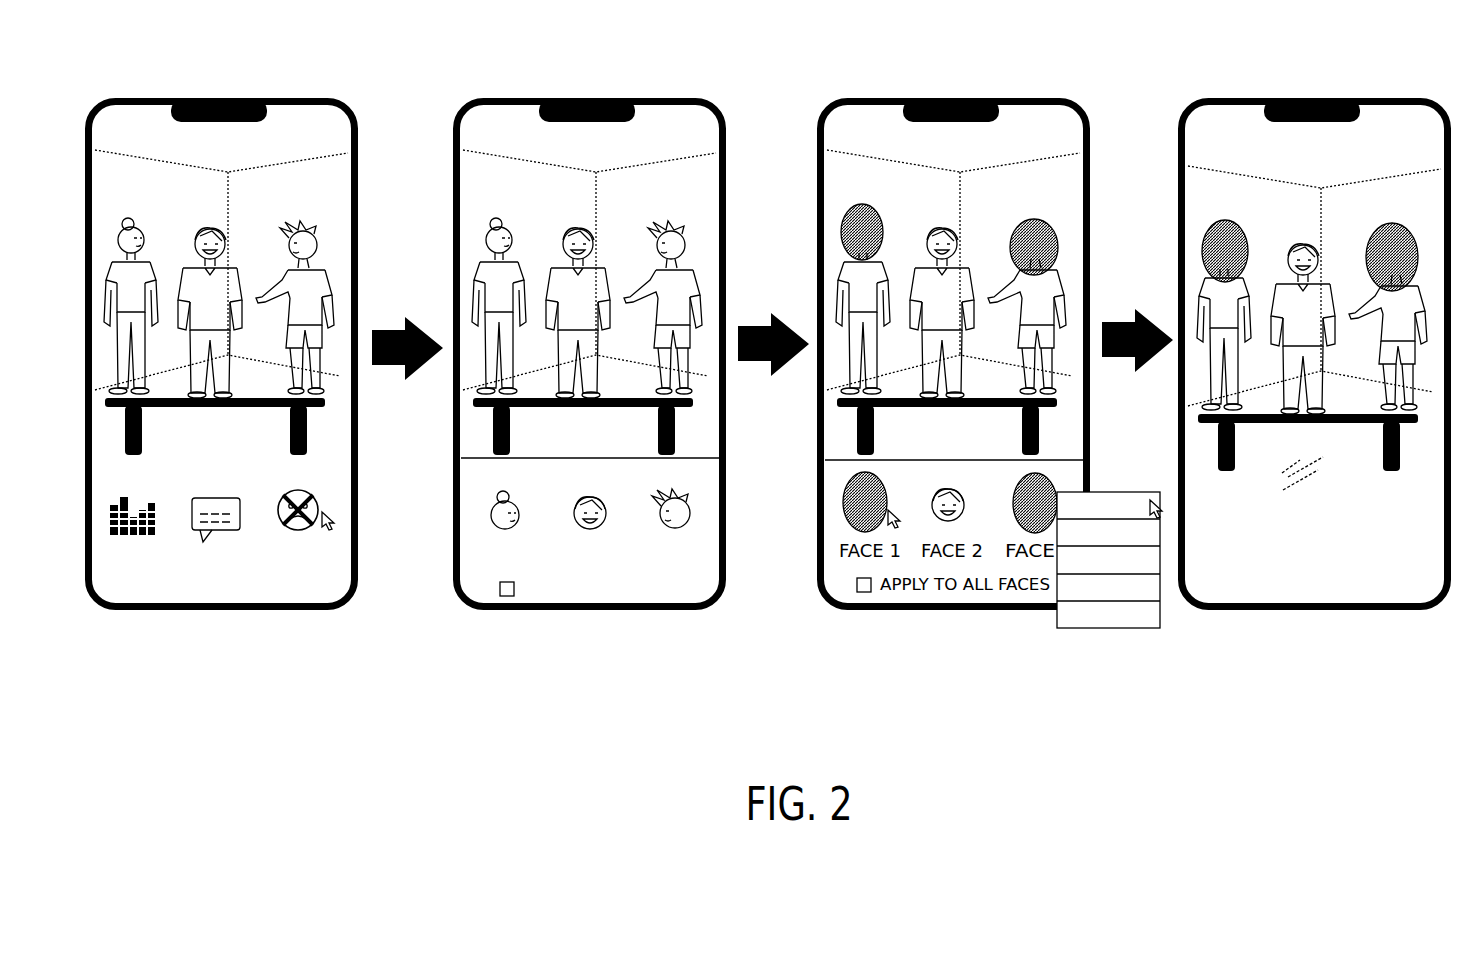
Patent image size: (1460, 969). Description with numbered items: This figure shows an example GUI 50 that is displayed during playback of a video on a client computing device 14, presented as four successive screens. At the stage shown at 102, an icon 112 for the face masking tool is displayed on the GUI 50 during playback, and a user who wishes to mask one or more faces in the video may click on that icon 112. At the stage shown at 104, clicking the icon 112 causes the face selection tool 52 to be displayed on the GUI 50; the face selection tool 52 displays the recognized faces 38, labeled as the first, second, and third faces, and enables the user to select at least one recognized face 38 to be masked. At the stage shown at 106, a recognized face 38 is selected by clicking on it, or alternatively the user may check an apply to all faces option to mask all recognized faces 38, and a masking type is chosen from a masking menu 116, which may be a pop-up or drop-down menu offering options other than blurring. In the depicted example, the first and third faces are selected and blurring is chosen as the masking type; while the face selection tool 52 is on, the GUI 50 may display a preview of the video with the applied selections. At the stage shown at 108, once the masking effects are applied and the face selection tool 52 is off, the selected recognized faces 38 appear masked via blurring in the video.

The client computing device 14 is at (358, 176).
The graphical user interface 50 is at (768, 309).
The face selection tool 52 is at (719, 482).
The recognized face 38 is at (486, 514).
The icon 112 is at (312, 487).
The masking menu 116 is at (1107, 491).
The launching masking tool step 102 is at (222, 45).
The recognizing faces step 104 is at (590, 45).
The selecting faces to be masked step 106 is at (955, 45).
The masking selected faces step 108 is at (1315, 45).